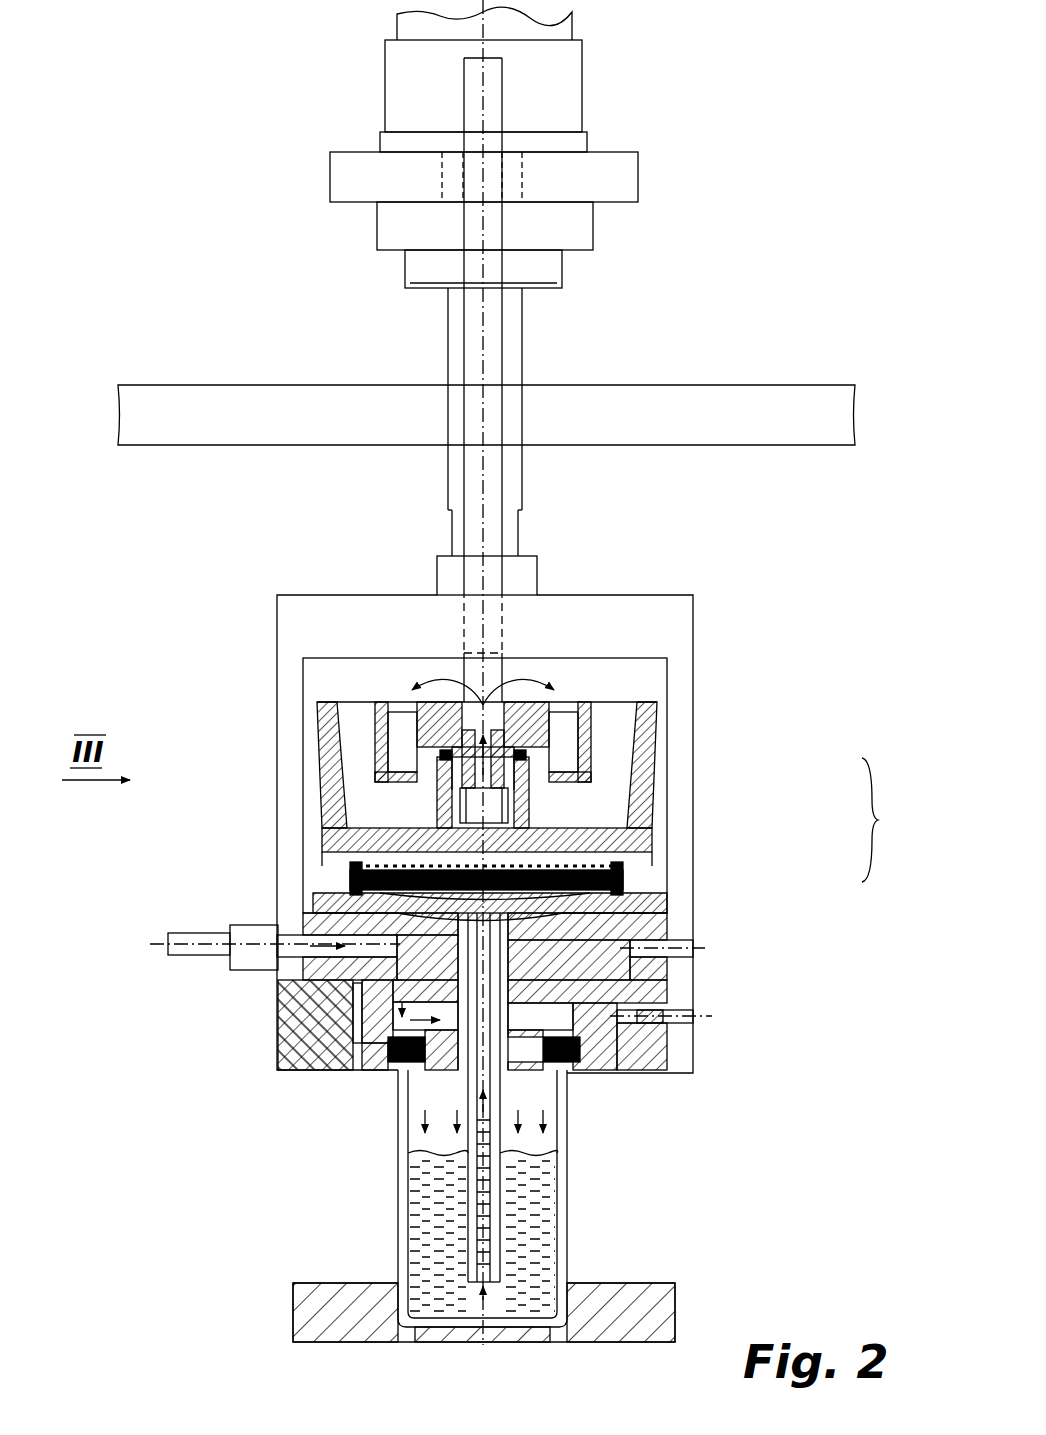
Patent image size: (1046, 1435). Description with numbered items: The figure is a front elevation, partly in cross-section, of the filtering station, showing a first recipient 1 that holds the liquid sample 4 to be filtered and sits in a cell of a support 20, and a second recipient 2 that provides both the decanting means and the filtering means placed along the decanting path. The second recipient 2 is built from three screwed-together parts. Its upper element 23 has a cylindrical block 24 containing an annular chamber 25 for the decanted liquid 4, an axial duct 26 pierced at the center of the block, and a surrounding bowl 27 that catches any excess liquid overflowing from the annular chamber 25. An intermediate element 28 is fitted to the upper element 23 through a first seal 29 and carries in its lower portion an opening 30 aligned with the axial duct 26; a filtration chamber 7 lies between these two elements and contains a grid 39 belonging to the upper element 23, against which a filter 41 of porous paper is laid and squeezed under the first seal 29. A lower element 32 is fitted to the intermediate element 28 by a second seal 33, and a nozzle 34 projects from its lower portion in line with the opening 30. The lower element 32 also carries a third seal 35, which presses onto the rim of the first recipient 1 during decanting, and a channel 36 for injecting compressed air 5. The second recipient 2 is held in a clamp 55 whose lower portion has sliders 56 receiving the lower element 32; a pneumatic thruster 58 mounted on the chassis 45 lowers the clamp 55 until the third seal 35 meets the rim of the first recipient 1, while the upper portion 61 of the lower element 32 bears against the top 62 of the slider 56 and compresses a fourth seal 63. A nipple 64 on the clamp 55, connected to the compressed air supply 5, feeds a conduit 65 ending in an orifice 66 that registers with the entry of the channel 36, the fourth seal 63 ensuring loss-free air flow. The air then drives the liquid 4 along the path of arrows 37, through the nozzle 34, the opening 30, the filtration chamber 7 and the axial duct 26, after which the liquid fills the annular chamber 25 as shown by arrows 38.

The first recipient 1 is at (557, 1238).
The second recipient 2 is at (553, 966).
The liquid sample 4 is at (543, 1203).
The compressed air 5 is at (147, 944).
The filtration chamber 7 is at (540, 850).
The support 20 is at (635, 1337).
The upper element 23 is at (673, 760).
The cylindrical block 24 is at (598, 745).
The annular chamber 25 is at (568, 728).
The axial duct 26 is at (487, 705).
The bowl 27 is at (665, 752).
The intermediate element 28 is at (670, 866).
The first seal 29 is at (667, 813).
The opening 30 is at (690, 895).
The lower element 32 is at (690, 990).
The second seal 33 is at (693, 925).
The nozzle 34 is at (493, 1137).
The third seal 35 is at (580, 1070).
The channel 36 is at (283, 1062).
The liquid path arrows 37 is at (462, 778).
The filling arrows 38 is at (545, 672).
The grid 39 is at (300, 835).
The filter 41 is at (303, 868).
The chassis 45 is at (355, 178).
The clamp 55 is at (290, 712).
The sliders 56 is at (347, 1072).
The pneumatic thruster 58 is at (553, 18).
The upper portion 61 is at (693, 998).
The top 62 is at (283, 1045).
The fourth seal 63 is at (285, 1010).
The nipple 64 is at (240, 922).
The conduit 65 is at (270, 987).
The orifice 66 is at (557, 1075).